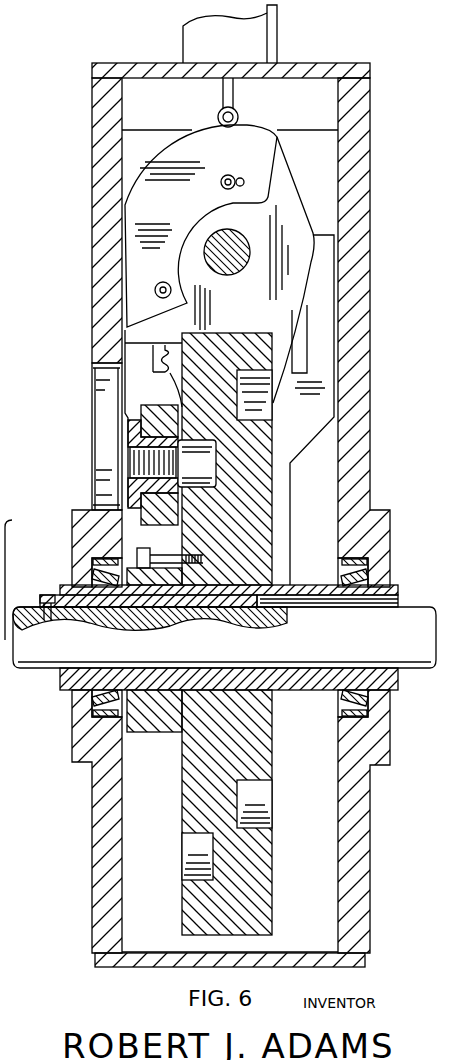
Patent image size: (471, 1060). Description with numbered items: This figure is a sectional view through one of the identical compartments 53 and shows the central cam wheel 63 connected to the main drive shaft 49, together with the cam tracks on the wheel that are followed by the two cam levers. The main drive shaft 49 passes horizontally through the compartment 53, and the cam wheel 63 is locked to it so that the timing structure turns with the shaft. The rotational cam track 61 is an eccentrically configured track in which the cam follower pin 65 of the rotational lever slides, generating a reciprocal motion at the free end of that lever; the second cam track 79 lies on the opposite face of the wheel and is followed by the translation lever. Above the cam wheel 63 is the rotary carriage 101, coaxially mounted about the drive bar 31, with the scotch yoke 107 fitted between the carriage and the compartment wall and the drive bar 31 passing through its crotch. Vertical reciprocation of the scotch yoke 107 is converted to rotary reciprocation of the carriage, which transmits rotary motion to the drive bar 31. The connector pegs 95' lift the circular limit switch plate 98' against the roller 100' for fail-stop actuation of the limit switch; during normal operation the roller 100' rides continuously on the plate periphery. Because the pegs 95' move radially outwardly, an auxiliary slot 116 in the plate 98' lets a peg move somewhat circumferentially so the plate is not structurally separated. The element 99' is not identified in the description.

The compartment 53 is at (93, 80).
The hanger bar 99' is at (248, 93).
The roller 100' is at (255, 117).
The circular limit switch plate 98' is at (206, 227).
The rotary carriage 101 is at (280, 185).
The drive bar 31 is at (238, 271).
The connector pegs 95' is at (178, 229).
The auxiliary slot 116 is at (244, 181).
The cam wheel 63 is at (273, 895).
The second cam track 79 is at (258, 790).
The rotational cam track 61 is at (203, 493).
The cam follower pin 65 is at (203, 460).
The scotch yoke 107 is at (293, 450).
The main drive shaft 49 is at (224, 637).